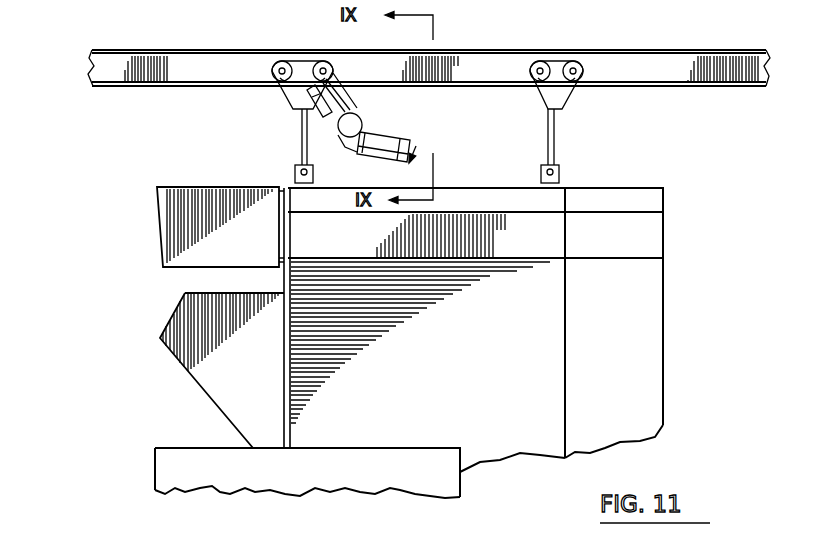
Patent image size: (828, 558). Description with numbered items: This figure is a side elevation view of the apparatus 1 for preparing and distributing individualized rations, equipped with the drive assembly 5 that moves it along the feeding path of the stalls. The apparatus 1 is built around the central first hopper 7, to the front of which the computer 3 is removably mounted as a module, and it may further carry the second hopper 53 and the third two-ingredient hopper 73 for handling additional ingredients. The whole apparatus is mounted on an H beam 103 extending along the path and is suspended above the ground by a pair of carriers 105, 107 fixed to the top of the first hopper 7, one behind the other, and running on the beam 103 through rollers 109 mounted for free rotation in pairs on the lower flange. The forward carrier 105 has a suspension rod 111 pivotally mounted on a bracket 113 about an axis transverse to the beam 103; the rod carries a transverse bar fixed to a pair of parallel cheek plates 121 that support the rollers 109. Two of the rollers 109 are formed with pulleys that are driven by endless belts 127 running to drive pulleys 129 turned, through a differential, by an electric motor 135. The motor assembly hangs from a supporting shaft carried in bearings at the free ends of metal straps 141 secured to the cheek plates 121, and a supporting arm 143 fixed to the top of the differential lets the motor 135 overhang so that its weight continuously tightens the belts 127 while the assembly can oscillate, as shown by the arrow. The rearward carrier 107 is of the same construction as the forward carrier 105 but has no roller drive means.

The apparatus 1 is at (140, 327).
The computer 3 is at (160, 221).
The drive assembly 5 is at (222, 135).
The first hopper 7 is at (476, 186).
The second hopper 53 is at (190, 378).
The third two-ingredient hopper 73 is at (665, 312).
The H beam 103 is at (640, 51).
The forward carrier 105 is at (298, 150).
The rearward carrier 107 is at (556, 152).
The rollers 109 is at (272, 71).
The suspension rod 111 is at (309, 137).
The bracket 113 is at (314, 172).
The cheek plates 121 is at (295, 89).
The endless belts 127 is at (356, 106).
The drive pulleys 129 is at (362, 121).
The electric motor 135 is at (405, 138).
The metal straps 141 is at (305, 100).
The supporting arm 143 is at (312, 114).